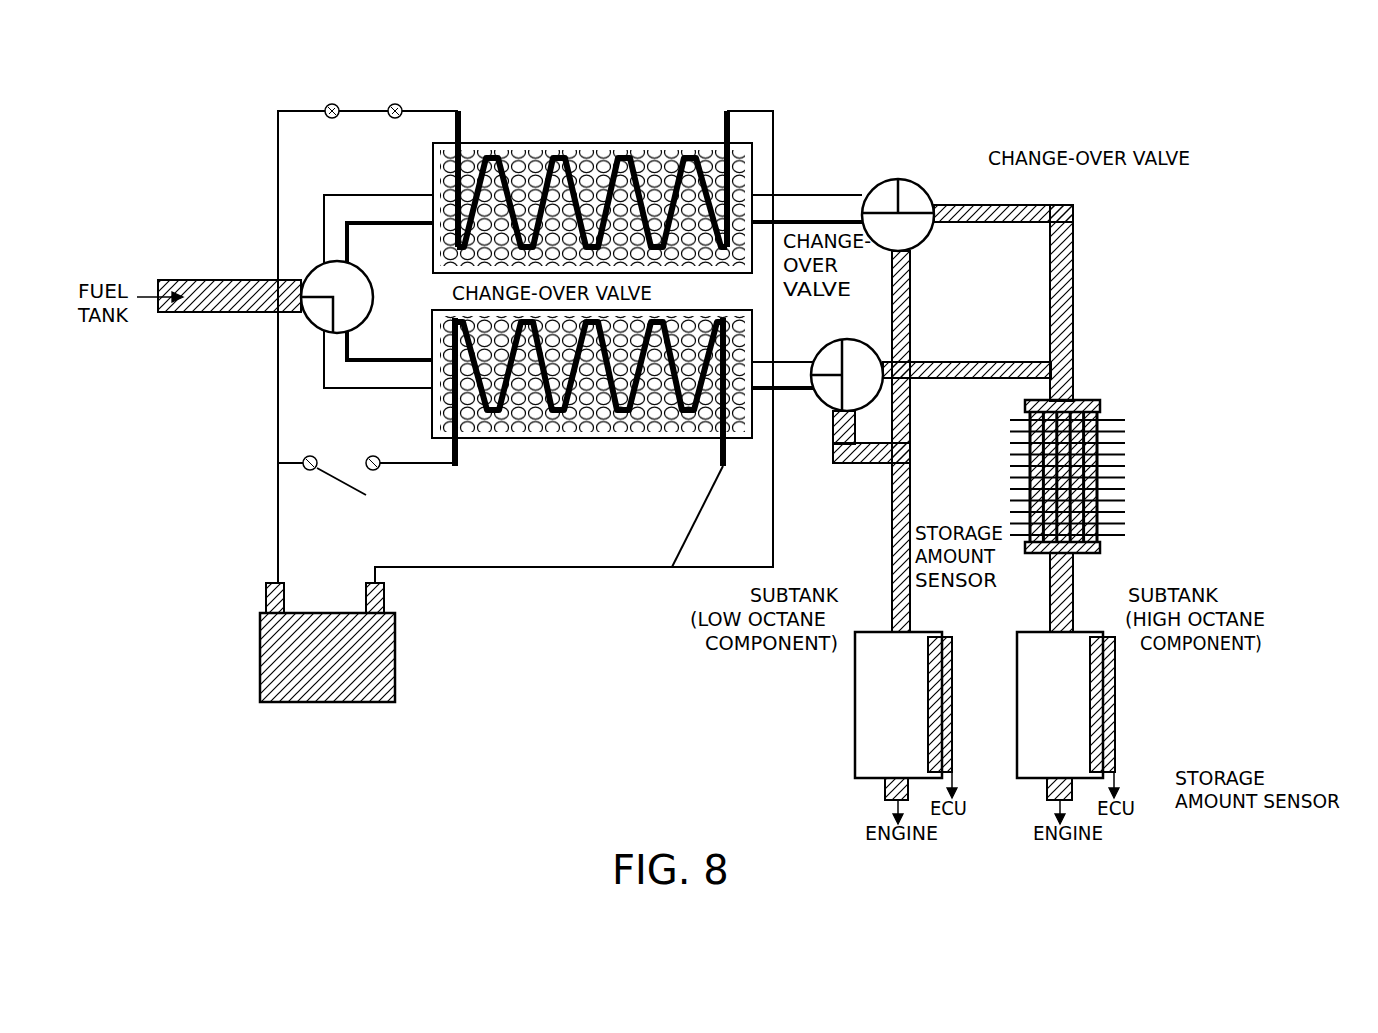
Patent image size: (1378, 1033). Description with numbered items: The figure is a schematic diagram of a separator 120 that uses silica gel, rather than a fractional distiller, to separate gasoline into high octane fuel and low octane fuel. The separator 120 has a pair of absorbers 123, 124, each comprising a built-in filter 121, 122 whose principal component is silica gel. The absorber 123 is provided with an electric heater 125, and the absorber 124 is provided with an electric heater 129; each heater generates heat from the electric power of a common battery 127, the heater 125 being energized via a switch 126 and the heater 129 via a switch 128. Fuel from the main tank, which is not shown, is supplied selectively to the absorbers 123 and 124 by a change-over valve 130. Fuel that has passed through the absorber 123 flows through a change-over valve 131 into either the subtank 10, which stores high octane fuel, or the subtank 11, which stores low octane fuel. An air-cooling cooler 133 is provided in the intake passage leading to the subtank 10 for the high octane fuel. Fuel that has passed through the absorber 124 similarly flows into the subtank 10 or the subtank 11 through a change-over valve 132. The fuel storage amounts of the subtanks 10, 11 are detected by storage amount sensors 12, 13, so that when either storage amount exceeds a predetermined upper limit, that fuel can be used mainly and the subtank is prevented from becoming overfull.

The separator 120 is at (364, 82).
The filter 121 is at (522, 162).
The filter 122 is at (532, 414).
The absorber 123 is at (630, 143).
The absorber 124 is at (610, 440).
The electric heater 125 is at (562, 156).
The switch 126 is at (363, 117).
The battery 127 is at (396, 655).
The switch 128 is at (340, 482).
The electric heater 129 is at (558, 416).
The change-over valve 130 is at (376, 295).
The change-over valve 131 is at (924, 184).
The change-over valve 132 is at (842, 340).
The air-cooling cooler 133 is at (1025, 441).
The subtank 10 is at (1090, 632).
The subtank 11 is at (862, 632).
The storage amount sensor 12 is at (1116, 755).
The storage amount sensor 13 is at (952, 665).